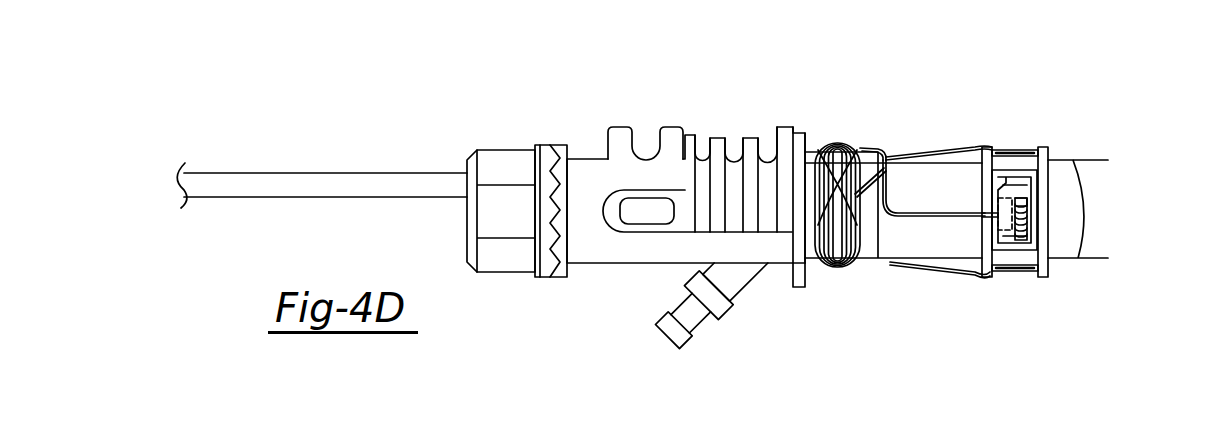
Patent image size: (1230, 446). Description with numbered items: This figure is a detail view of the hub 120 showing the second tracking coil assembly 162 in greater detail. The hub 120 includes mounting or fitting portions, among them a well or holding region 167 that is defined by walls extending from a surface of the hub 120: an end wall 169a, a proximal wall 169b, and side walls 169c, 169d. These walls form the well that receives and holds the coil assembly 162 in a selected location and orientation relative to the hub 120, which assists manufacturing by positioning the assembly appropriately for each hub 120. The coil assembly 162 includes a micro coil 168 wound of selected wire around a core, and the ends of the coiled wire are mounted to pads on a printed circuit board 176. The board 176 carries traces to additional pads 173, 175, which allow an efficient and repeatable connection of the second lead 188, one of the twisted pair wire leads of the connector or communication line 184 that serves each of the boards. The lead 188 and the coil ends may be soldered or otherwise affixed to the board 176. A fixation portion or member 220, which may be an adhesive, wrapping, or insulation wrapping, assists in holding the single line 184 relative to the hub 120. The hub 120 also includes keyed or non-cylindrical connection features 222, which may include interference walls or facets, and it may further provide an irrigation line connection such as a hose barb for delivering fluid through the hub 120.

The hub 120 is at (1026, 189).
The second tracking coil assembly 162 is at (1030, 190).
The well or holding region 167 is at (1028, 170).
The micro coil 168 is at (1022, 207).
The end wall 169a is at (1045, 250).
The proximal wall 169b is at (985, 248).
The side wall 169c is at (1020, 258).
The side wall 169d is at (993, 150).
The pad 173 is at (1005, 183).
The pad 175 is at (1003, 232).
The printed circuit board 176 is at (1027, 230).
The connector or communication line 184 is at (868, 148).
The second lead 188 is at (920, 210).
The fixation portion or member 220 is at (830, 148).
The keyed or non-cylindrical features 222 is at (620, 128).